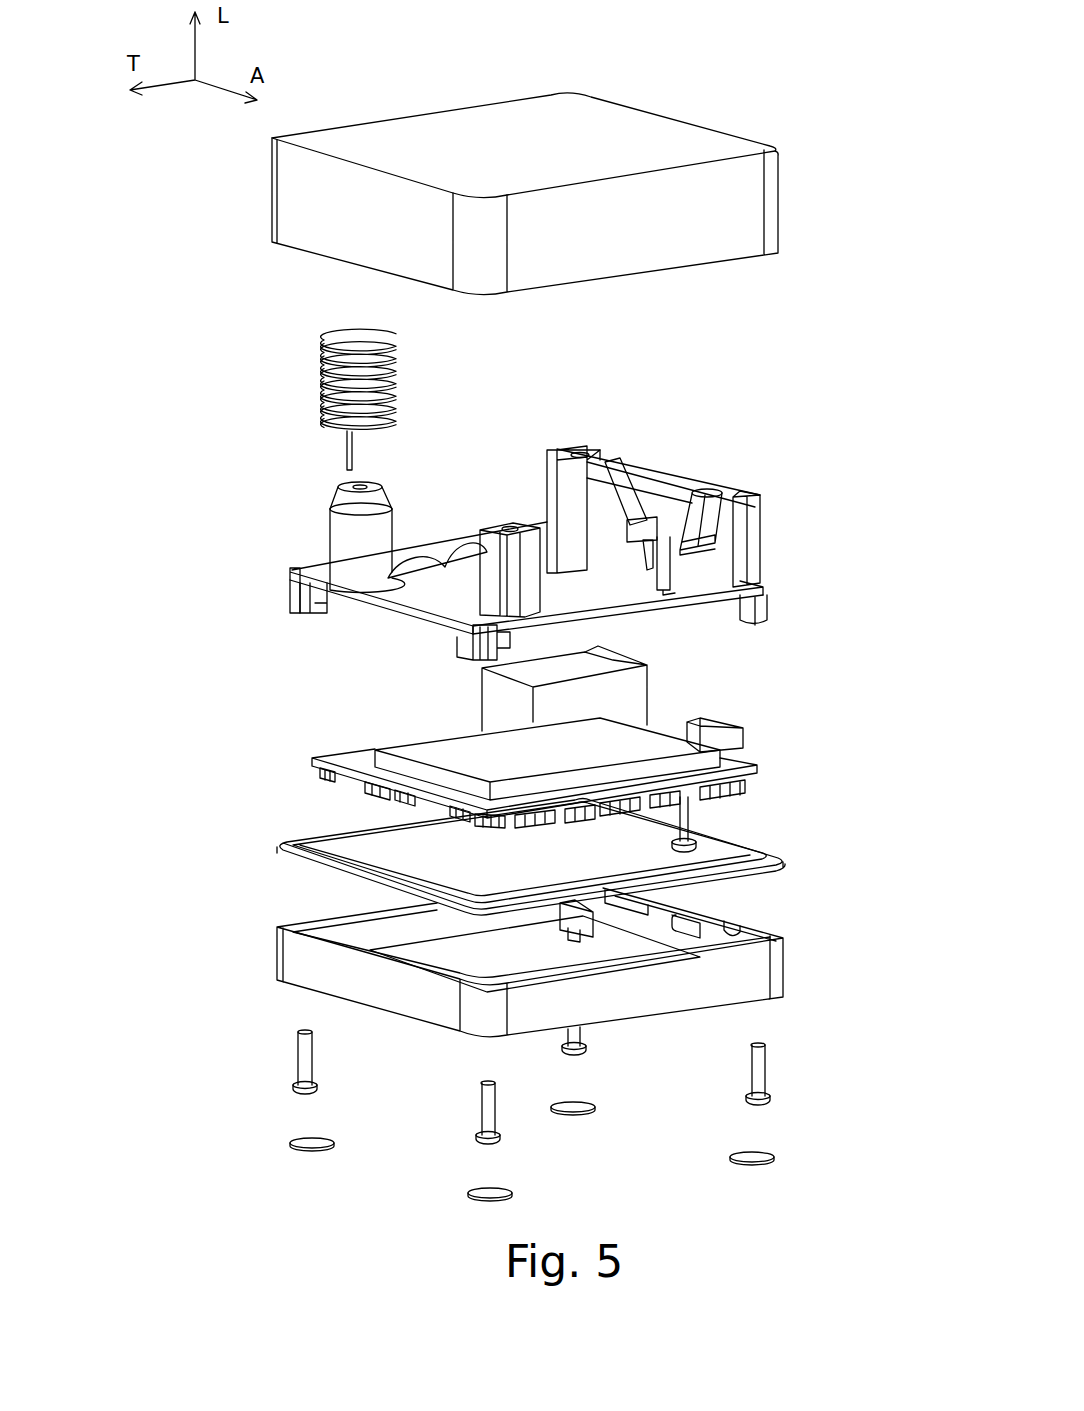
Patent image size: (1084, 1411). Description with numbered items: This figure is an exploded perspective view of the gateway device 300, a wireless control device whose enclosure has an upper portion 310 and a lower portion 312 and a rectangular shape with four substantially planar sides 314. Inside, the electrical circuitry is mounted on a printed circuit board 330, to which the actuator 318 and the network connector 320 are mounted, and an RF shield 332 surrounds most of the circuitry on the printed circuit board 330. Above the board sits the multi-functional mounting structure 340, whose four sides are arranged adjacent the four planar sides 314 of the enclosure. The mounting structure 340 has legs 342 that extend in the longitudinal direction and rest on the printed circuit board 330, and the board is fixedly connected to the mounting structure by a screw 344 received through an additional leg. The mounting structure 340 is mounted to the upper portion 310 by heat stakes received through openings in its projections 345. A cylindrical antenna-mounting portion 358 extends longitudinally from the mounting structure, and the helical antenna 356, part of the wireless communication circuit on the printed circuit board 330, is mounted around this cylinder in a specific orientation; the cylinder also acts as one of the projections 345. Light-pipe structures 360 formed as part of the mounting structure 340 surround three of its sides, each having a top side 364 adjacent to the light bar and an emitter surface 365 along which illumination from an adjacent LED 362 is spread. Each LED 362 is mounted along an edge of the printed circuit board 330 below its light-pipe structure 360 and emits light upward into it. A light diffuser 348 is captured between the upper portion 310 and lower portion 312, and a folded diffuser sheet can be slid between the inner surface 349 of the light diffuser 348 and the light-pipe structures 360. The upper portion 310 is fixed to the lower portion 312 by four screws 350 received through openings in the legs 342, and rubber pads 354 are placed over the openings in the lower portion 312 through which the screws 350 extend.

The gateway device 300 is at (753, 88).
The upper portion 310 is at (453, 137).
The planar sides 314 is at (362, 236).
The antenna 356 is at (397, 380).
The cylindrical antenna-mounting portion 358 is at (348, 535).
The multi-functional mounting structure 340 is at (701, 450).
The projections 345 is at (500, 537).
The top side 364 is at (680, 590).
The light-pipe structures 360 is at (455, 560).
The legs 342 is at (575, 560).
The emitter surface 365 is at (660, 640).
The network connector 320 is at (620, 690).
The RF shield 332 is at (635, 747).
The printed circuit board 330 is at (345, 757).
The LED 362 is at (392, 797).
The screw 344 is at (698, 848).
The actuator 318 is at (745, 742).
The light diffuser 348 is at (290, 855).
The inner surface 349 is at (330, 838).
The lower portion 312 is at (292, 955).
The screws 350 is at (297, 1062).
The rubber pads 354 is at (310, 1150).